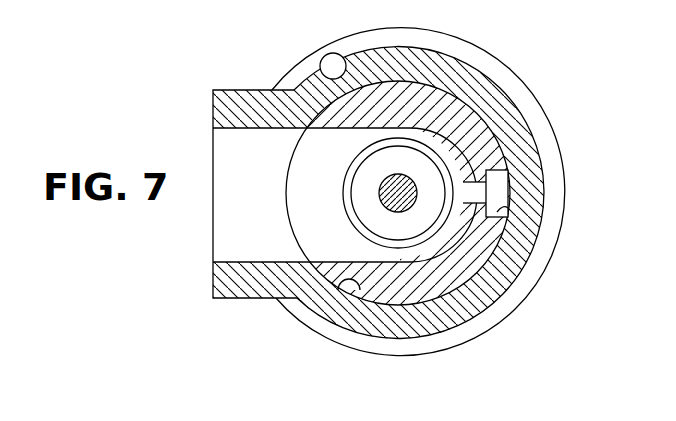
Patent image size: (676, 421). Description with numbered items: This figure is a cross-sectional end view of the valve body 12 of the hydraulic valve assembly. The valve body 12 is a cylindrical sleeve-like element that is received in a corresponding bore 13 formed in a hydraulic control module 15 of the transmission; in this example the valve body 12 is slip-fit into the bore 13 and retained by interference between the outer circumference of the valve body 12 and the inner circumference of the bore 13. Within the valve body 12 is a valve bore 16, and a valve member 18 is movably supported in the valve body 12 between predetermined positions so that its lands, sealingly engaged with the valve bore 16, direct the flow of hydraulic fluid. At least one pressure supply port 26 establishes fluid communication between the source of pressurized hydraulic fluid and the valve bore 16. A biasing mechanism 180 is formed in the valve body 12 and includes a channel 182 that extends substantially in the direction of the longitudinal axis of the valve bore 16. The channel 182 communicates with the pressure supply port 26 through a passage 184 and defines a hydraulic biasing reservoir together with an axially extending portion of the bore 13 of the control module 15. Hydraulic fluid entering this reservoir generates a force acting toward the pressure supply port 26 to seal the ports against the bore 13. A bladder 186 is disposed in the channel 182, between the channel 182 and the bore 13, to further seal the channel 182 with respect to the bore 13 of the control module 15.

The valve body 12 is at (383, 98).
The bore 13 is at (360, 297).
The hydraulic control module 15 is at (340, 76).
The valve bore 16 is at (424, 250).
The valve member 18 is at (365, 199).
The pressure supply port 26 is at (243, 128).
The biasing mechanism 180 is at (509, 166).
The channel 182 is at (490, 183).
The passage 184 is at (477, 203).
The bladder 186 is at (508, 208).